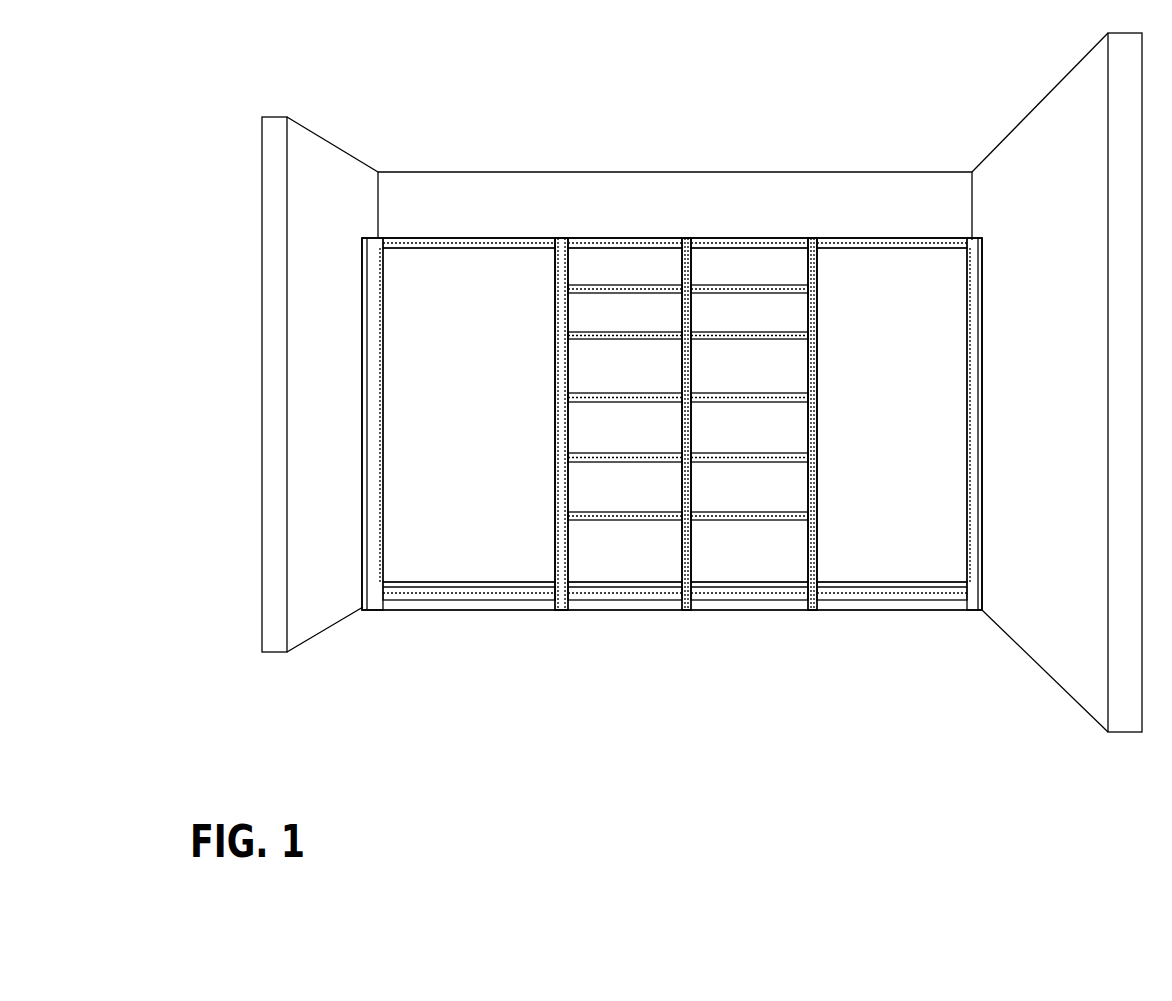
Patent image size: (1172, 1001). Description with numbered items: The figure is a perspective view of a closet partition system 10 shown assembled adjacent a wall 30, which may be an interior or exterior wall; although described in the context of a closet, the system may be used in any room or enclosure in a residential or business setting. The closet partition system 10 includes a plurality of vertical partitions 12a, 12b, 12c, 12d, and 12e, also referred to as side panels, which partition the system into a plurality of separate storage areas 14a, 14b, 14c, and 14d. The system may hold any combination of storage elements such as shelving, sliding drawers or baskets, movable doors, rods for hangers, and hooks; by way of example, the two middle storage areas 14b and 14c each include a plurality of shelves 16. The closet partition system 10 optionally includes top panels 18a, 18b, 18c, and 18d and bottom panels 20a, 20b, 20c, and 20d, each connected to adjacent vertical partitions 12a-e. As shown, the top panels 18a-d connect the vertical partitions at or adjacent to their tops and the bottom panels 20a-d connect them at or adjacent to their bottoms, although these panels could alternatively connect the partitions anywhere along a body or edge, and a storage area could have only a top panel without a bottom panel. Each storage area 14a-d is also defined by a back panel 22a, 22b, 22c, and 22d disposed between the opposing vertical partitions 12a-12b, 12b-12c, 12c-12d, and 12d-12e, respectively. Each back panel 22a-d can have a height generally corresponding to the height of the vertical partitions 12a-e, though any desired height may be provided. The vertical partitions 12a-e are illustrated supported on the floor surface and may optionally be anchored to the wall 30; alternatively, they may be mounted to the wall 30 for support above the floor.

The closet partition system 10 is at (643, 135).
The vertical partition 12a is at (377, 265).
The vertical partition 12b is at (563, 262).
The vertical partition 12c is at (682, 263).
The vertical partition 12d is at (815, 263).
The vertical partition 12e is at (970, 293).
The storage area 14a is at (451, 562).
The storage area 14b is at (636, 562).
The storage area 14c is at (761, 563).
The storage area 14d is at (902, 561).
The shelves 16 is at (733, 337).
The top panel 18a is at (450, 240).
The top panel 18b is at (618, 240).
The top panel 18c is at (753, 242).
The top panel 18d is at (877, 240).
The bottom panel 20a is at (490, 590).
The bottom panel 20b is at (593, 592).
The bottom panel 20c is at (723, 592).
The bottom panel 20d is at (863, 592).
The back panel 22a is at (428, 377).
The back panel 22b is at (595, 423).
The back panel 22c is at (777, 430).
The back panel 22d is at (920, 465).
The wall 30 is at (512, 200).